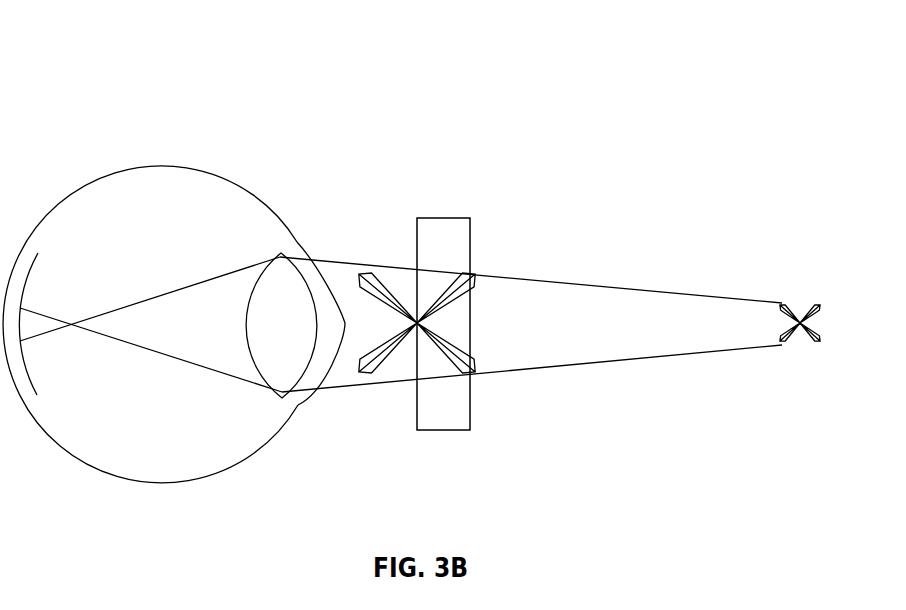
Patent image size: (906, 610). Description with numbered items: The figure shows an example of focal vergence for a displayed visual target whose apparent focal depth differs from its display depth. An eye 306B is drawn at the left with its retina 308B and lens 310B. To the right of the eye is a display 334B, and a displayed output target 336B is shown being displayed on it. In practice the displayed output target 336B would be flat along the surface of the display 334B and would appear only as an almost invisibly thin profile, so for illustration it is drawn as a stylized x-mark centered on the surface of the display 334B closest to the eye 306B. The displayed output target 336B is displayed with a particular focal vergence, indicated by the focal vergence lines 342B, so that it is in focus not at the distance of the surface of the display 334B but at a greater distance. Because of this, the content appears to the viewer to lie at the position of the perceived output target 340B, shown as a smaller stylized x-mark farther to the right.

The eye 306B is at (91, 183).
The retina 308B is at (27, 277).
The lens 310B is at (278, 252).
The display 334B is at (442, 218).
The displayed output target 336B is at (395, 355).
The perceived output target 340B is at (795, 330).
The focal vergence lines 342B is at (340, 387).